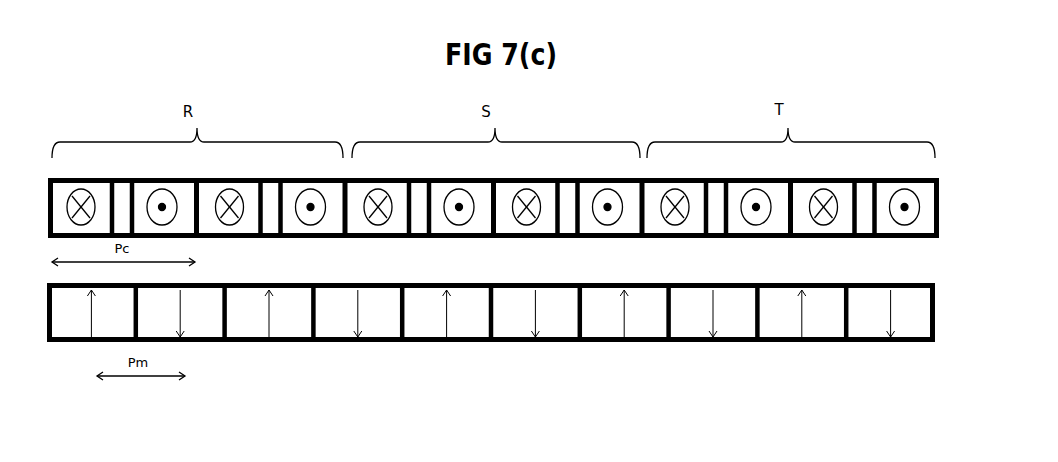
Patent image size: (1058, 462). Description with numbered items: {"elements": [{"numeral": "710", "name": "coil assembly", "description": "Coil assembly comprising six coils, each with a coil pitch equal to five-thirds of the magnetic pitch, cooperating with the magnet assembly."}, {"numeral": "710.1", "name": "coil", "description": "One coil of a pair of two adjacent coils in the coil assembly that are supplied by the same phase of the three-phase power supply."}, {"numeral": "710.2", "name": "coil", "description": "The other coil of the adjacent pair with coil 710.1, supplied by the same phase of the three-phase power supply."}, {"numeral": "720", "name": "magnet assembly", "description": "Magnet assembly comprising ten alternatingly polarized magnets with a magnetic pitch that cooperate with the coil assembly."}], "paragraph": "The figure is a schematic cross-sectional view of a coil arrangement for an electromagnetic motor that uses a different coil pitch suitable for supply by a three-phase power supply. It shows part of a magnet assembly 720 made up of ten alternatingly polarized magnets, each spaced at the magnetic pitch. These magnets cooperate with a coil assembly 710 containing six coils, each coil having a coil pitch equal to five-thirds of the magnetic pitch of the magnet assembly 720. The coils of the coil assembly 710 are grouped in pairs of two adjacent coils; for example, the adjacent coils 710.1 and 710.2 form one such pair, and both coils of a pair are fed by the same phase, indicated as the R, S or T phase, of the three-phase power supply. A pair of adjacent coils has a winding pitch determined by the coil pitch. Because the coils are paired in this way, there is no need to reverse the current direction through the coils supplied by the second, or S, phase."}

The coil assembly 710 is at (494, 179).
The first coil 710.1 is at (400, 223).
The second coil 710.2 is at (572, 237).
The magnet array 720 is at (116, 393).